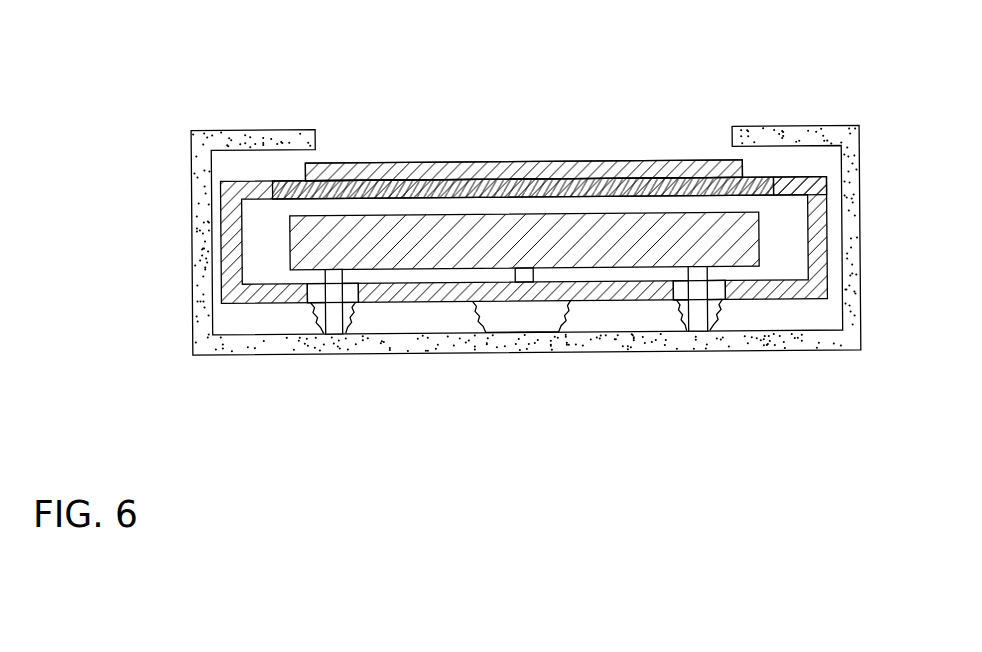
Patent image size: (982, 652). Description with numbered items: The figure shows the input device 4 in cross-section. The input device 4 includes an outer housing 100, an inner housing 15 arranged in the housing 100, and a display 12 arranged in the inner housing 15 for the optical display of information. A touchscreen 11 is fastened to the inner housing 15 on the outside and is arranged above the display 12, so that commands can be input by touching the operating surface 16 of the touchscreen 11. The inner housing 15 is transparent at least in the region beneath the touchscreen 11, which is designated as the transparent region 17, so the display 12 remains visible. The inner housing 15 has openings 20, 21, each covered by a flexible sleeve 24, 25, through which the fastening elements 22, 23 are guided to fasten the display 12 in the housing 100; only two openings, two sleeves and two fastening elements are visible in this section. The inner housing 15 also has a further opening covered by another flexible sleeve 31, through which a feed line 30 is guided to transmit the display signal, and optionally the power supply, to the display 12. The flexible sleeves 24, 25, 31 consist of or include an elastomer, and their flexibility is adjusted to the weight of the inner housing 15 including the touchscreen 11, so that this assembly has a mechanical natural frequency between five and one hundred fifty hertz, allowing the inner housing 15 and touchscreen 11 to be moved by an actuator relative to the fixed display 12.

The input device 4 is at (808, 115).
The housing 100 is at (198, 248).
The touchscreen 11 is at (468, 172).
The display 12 is at (548, 243).
The inner housing 15 is at (798, 183).
The operating surface 16 is at (372, 164).
The transparent region 17 is at (291, 188).
The opening 20 is at (351, 297).
The opening 21 is at (722, 301).
The fastening element 22 is at (331, 321).
The fastening element 23 is at (697, 318).
The flexible sleeve 24 is at (343, 333).
The flexible sleeve 25 is at (718, 293).
The feed line 30 is at (523, 276).
The flexible sleeve 31 is at (541, 314).